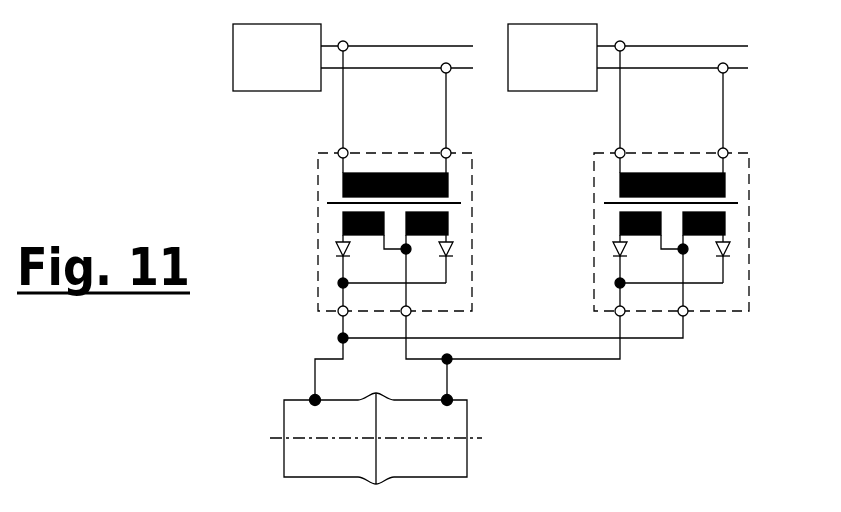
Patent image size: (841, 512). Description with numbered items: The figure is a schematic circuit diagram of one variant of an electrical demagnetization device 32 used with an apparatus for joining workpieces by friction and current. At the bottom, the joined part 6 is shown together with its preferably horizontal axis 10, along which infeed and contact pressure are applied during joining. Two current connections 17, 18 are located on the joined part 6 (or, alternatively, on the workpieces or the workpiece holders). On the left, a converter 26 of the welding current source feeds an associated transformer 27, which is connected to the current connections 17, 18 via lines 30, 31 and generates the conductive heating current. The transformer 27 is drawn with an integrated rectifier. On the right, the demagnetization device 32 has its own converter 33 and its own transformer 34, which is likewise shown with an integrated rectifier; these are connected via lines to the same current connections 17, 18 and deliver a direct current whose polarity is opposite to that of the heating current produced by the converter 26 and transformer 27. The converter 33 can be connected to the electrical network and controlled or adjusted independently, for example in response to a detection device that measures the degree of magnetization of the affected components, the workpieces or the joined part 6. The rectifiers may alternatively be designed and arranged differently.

The joined part 6 is at (443, 457).
The axis 10 is at (275, 440).
The current connection 17 is at (310, 397).
The current connection 18 is at (450, 398).
The converter 26 is at (253, 49).
The transformer 27 is at (317, 177).
The line 30 is at (343, 92).
The line 31 is at (447, 105).
The demagnetization device 32 is at (712, 351).
The converter 33 is at (540, 87).
The transformer 34 is at (749, 159).